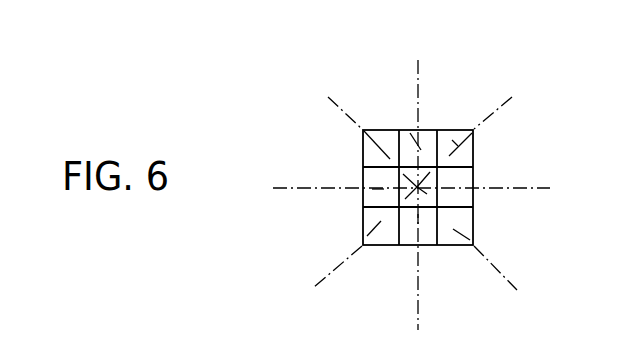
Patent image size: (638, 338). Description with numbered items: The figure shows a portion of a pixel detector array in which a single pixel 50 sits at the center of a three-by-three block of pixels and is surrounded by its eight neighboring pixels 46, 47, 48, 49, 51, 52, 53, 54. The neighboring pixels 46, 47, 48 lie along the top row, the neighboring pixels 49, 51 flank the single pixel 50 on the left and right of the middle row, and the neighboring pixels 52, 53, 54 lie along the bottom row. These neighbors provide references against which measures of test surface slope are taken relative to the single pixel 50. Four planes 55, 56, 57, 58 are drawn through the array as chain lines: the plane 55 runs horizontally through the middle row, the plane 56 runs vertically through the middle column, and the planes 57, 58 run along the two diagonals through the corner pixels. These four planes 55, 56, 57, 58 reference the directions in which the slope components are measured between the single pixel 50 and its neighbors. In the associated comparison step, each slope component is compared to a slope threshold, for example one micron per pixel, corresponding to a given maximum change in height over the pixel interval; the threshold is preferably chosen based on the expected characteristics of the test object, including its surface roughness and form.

The neighboring pixel 46 is at (361, 150).
The neighboring pixel 47 is at (408, 130).
The neighboring pixel 48 is at (452, 130).
The neighboring pixel 49 is at (382, 192).
The single pixel 50 is at (465, 207).
The neighboring pixel 51 is at (458, 183).
The neighboring pixel 52 is at (377, 247).
The neighboring pixel 53 is at (422, 232).
The neighboring pixel 54 is at (455, 228).
The plane 55 is at (303, 185).
The plane 56 is at (420, 67).
The plane 57 is at (517, 290).
The plane 58 is at (318, 285).